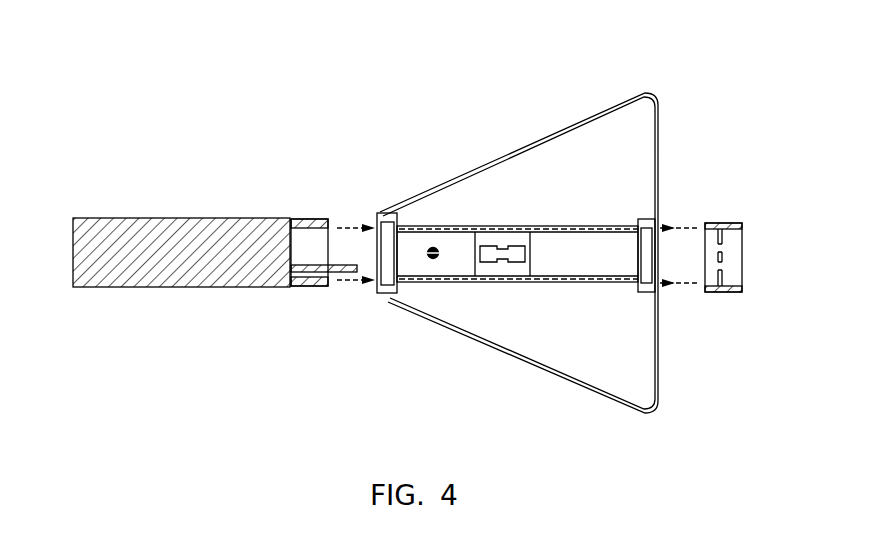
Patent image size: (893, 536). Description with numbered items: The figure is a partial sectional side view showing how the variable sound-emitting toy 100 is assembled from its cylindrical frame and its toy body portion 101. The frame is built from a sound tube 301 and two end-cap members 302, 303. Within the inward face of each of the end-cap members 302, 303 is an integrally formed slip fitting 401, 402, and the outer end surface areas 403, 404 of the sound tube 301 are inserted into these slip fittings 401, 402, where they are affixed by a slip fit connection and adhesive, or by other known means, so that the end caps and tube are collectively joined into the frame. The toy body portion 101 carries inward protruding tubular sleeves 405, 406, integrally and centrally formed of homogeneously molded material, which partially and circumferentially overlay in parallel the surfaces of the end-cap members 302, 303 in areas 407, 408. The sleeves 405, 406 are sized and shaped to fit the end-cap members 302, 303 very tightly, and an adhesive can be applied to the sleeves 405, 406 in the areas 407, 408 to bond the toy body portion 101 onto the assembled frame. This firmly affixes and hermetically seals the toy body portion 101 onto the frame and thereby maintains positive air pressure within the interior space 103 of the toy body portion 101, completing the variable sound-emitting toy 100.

The variable sound-emitting toy 100 is at (477, 384).
The toy body portion 101 is at (532, 141).
The interior space 103 is at (490, 200).
The sound tube 301 is at (593, 222).
The end-cap member 302 is at (160, 216).
The end-cap member 303 is at (740, 218).
The slip fitting 401 is at (308, 217).
The slip fitting 402 is at (716, 221).
The outer end surface area 403 is at (627, 221).
The outer end surface area 404 is at (405, 216).
The tubular sleeve 405 is at (389, 207).
The tubular sleeve 406 is at (643, 212).
The area 407 is at (322, 211).
The area 408 is at (710, 217).